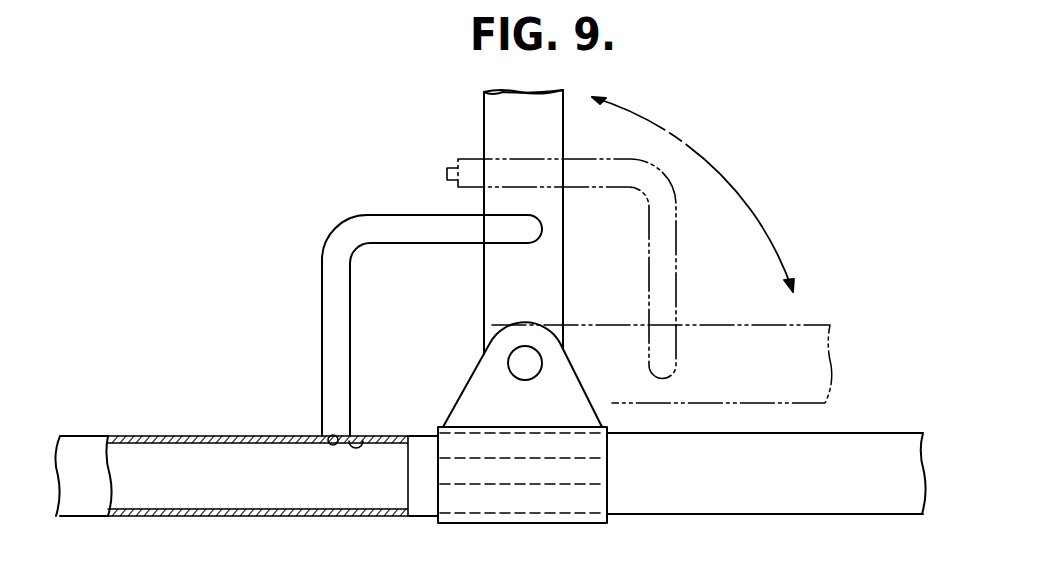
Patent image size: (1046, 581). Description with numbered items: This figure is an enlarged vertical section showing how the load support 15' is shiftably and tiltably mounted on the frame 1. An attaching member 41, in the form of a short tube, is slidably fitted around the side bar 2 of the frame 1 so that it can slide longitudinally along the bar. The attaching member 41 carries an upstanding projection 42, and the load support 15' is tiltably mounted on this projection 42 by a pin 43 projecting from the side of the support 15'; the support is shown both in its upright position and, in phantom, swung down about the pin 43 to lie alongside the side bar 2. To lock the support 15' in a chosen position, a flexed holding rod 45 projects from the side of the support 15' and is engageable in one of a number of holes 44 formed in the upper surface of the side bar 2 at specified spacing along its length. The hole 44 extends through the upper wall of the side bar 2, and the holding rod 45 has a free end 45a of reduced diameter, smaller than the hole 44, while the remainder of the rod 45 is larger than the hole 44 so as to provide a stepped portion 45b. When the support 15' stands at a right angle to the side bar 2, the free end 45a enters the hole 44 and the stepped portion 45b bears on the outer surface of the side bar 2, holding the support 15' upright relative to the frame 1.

The frame 1 is at (88, 418).
The side bar 2 is at (852, 433).
The load support 15' is at (627, 246).
The attaching member 41 is at (443, 426).
The projection 42 is at (482, 392).
The pin 43 is at (509, 363).
The hole 44 is at (128, 436).
The holding rod 45 is at (322, 266).
The free end 45a is at (333, 446).
The stepped portion 45b is at (358, 436).